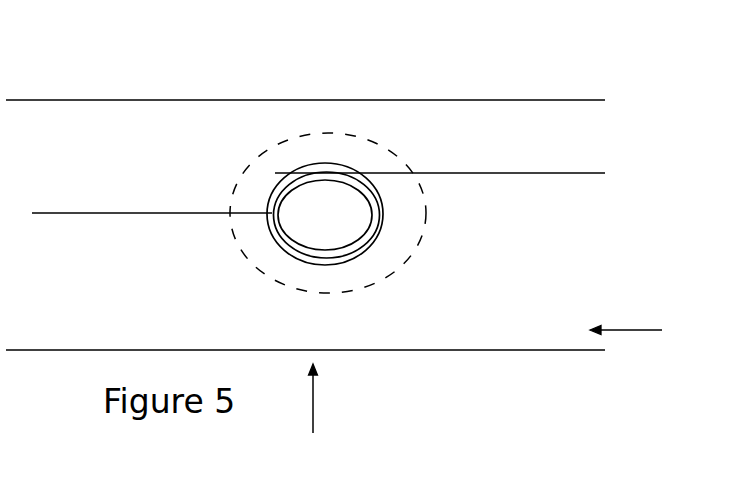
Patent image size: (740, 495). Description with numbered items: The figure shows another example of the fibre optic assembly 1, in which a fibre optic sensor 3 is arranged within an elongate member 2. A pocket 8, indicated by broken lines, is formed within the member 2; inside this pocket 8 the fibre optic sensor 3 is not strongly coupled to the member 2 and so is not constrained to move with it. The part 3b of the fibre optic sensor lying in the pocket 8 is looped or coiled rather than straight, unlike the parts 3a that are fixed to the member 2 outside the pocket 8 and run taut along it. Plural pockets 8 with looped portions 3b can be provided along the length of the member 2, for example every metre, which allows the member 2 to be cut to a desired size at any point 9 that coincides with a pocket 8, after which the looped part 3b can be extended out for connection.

The fibre optic assembly 1 is at (567, 99).
The member 2 is at (626, 311).
The fibre optic sensor 3 is at (573, 173).
The parts fixed to the member 3a is at (467, 172).
The looped part of the fibre optic sensor 3b is at (328, 163).
The pocket 8 is at (377, 268).
The point 9 is at (315, 414).